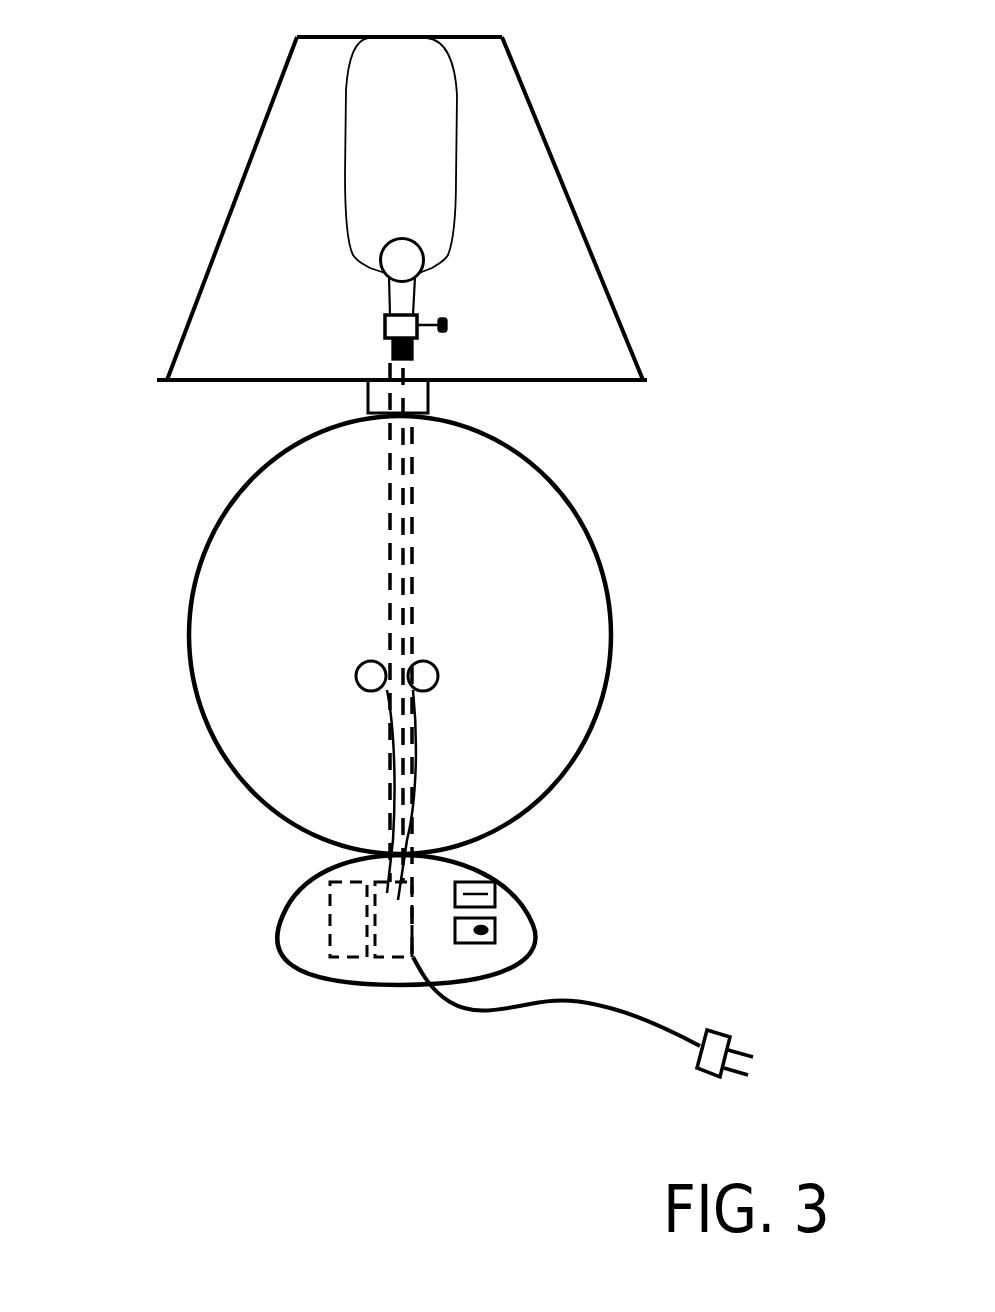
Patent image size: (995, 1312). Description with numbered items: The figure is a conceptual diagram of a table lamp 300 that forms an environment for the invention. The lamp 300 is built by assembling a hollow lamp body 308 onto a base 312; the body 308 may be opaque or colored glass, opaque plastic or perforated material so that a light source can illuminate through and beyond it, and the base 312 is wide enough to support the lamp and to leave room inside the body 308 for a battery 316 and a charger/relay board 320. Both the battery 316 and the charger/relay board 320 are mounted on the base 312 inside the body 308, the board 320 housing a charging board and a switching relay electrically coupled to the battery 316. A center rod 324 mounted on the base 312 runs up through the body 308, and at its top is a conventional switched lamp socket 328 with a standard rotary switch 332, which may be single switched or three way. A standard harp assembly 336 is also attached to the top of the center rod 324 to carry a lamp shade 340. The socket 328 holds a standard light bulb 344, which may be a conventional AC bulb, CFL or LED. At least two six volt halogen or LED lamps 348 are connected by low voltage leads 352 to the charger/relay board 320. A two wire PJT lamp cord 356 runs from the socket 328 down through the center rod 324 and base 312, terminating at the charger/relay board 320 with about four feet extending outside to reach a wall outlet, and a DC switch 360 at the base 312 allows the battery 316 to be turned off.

The lamp 300 is at (70, 29).
The lamp body 308 is at (673, 545).
The base 312 is at (527, 905).
The battery 316 is at (328, 902).
The charger/relay board 320 is at (398, 957).
The center rod 324 is at (388, 610).
The switched lamp socket 328 is at (385, 325).
The rotary switch 332 is at (447, 325).
The harp assembly 336 is at (457, 143).
The lamp shade 340 is at (575, 207).
The light bulb 344 is at (395, 242).
The halogen or LED lamps 348 is at (357, 684).
The low voltage leads 352 is at (395, 765).
The lamp cord 356 is at (657, 1020).
The DC switch 360 is at (497, 941).